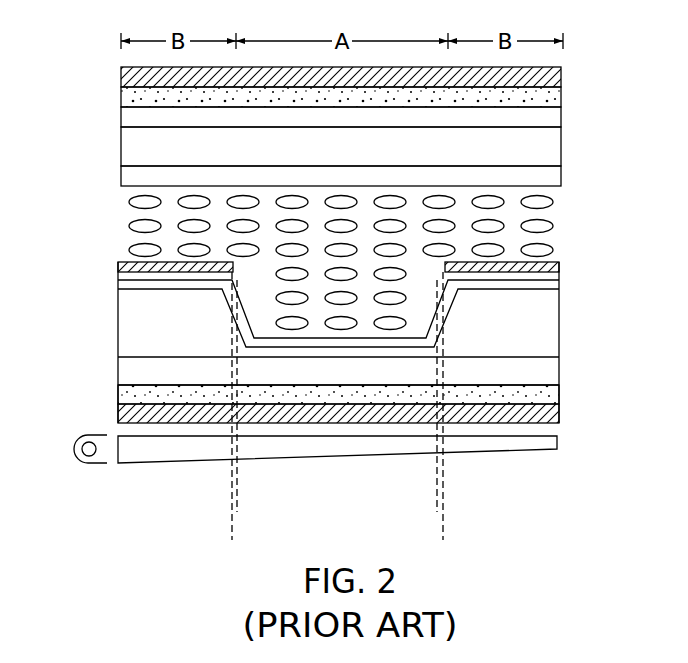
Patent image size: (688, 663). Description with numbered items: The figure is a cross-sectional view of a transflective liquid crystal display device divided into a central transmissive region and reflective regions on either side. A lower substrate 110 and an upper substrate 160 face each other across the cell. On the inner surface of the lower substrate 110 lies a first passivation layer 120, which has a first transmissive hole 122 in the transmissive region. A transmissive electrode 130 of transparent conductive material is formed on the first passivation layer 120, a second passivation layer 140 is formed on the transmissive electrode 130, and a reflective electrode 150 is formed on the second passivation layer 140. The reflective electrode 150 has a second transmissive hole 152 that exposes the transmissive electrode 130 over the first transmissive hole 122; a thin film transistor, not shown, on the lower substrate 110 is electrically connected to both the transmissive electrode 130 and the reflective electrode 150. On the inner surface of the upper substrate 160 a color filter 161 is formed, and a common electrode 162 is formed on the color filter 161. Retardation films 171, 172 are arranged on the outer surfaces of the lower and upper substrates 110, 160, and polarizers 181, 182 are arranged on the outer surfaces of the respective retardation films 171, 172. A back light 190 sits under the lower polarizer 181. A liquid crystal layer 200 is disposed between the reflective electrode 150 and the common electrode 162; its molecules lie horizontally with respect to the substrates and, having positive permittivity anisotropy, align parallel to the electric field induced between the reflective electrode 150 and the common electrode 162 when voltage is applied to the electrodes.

The lower substrate 110 is at (557, 379).
The first passivation layer 120 is at (556, 355).
The first transmissive hole 122 is at (237, 493).
The transmissive electrode 130 is at (553, 290).
The second passivation layer 140 is at (556, 282).
The reflective electrode 150 is at (561, 268).
The second transmissive hole 152 is at (443, 529).
The upper substrate 160 is at (553, 126).
The color filter 161 is at (553, 157).
The common electrode 162 is at (553, 184).
The retardation film 171 is at (558, 400).
The retardation film 172 is at (562, 97).
The lower polarizer 181 is at (560, 421).
The polarizer 182 is at (562, 79).
The back light 190 is at (560, 436).
The liquid crystal layer 200 is at (556, 222).